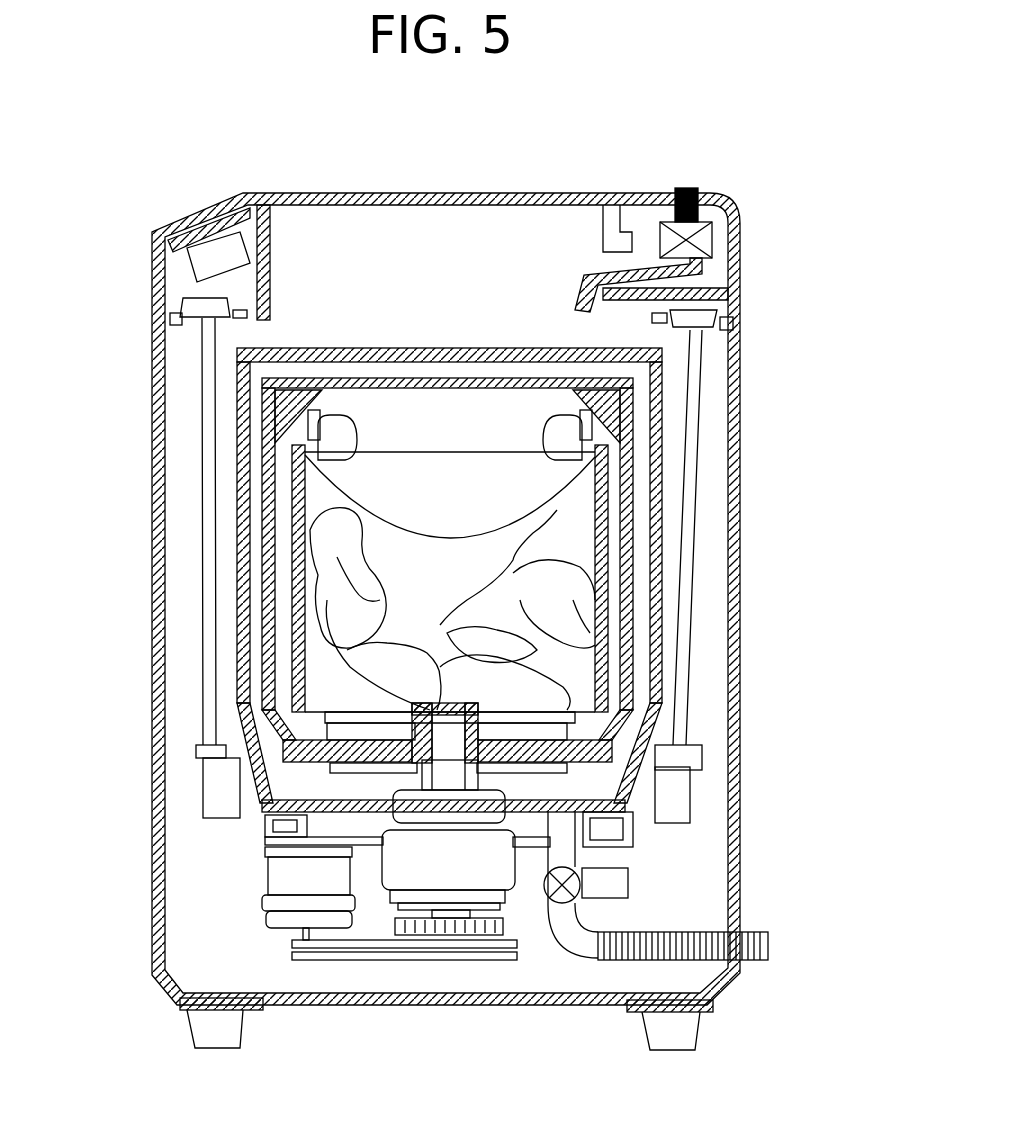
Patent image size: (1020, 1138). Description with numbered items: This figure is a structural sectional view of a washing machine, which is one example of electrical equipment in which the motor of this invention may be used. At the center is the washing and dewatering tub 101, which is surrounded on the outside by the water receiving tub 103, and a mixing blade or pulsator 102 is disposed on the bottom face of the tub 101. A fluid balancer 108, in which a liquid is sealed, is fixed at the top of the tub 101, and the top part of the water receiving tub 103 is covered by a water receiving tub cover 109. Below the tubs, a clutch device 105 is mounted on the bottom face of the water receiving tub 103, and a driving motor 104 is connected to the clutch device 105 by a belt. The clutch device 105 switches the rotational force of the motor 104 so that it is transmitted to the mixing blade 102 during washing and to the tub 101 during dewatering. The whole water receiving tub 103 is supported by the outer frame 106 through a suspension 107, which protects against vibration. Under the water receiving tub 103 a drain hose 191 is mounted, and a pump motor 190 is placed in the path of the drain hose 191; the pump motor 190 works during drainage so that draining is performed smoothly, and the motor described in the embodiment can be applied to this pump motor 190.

The washing & dewatering tub 101 is at (632, 553).
The mixing blade (pulsator) 102 is at (572, 712).
The water receiving tub 103 is at (662, 595).
The driving motor 104 is at (292, 882).
The clutch device 105 is at (458, 873).
The outer frame 106 is at (748, 363).
The suspension 107 is at (693, 480).
The fluid balancer 108 is at (288, 415).
The water receiving tub cover 109 is at (617, 357).
The pump motor 190 is at (630, 882).
The drain hose 191 is at (578, 932).